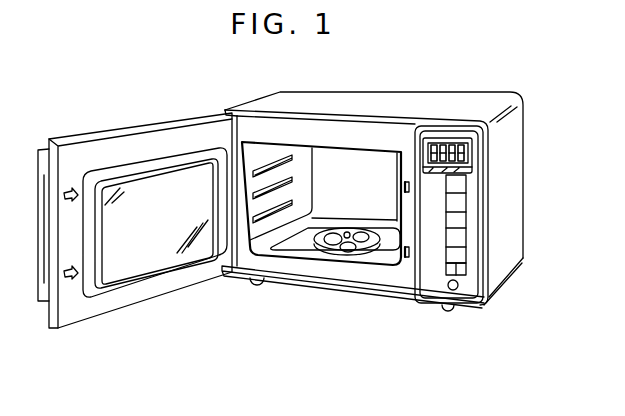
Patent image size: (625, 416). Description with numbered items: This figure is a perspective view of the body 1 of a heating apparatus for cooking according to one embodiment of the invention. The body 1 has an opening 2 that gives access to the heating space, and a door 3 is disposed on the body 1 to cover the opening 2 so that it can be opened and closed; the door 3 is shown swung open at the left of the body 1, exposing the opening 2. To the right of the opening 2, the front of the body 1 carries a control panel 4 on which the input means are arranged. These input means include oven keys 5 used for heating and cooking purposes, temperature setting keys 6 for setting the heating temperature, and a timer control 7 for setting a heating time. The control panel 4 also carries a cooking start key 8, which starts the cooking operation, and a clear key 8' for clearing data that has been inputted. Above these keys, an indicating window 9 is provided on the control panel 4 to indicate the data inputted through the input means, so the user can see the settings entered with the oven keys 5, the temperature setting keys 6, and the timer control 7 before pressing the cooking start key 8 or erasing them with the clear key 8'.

The body 1 is at (504, 200).
The opening 2 is at (335, 200).
The door 3 is at (139, 146).
The control panel 4 is at (438, 277).
The oven keys 5 is at (460, 229).
The temperature setting keys 6 is at (460, 270).
The timer control 7 is at (453, 291).
The cooking start key 8 is at (486, 155).
The clear key 8' is at (431, 119).
The indicating window 9 is at (453, 142).